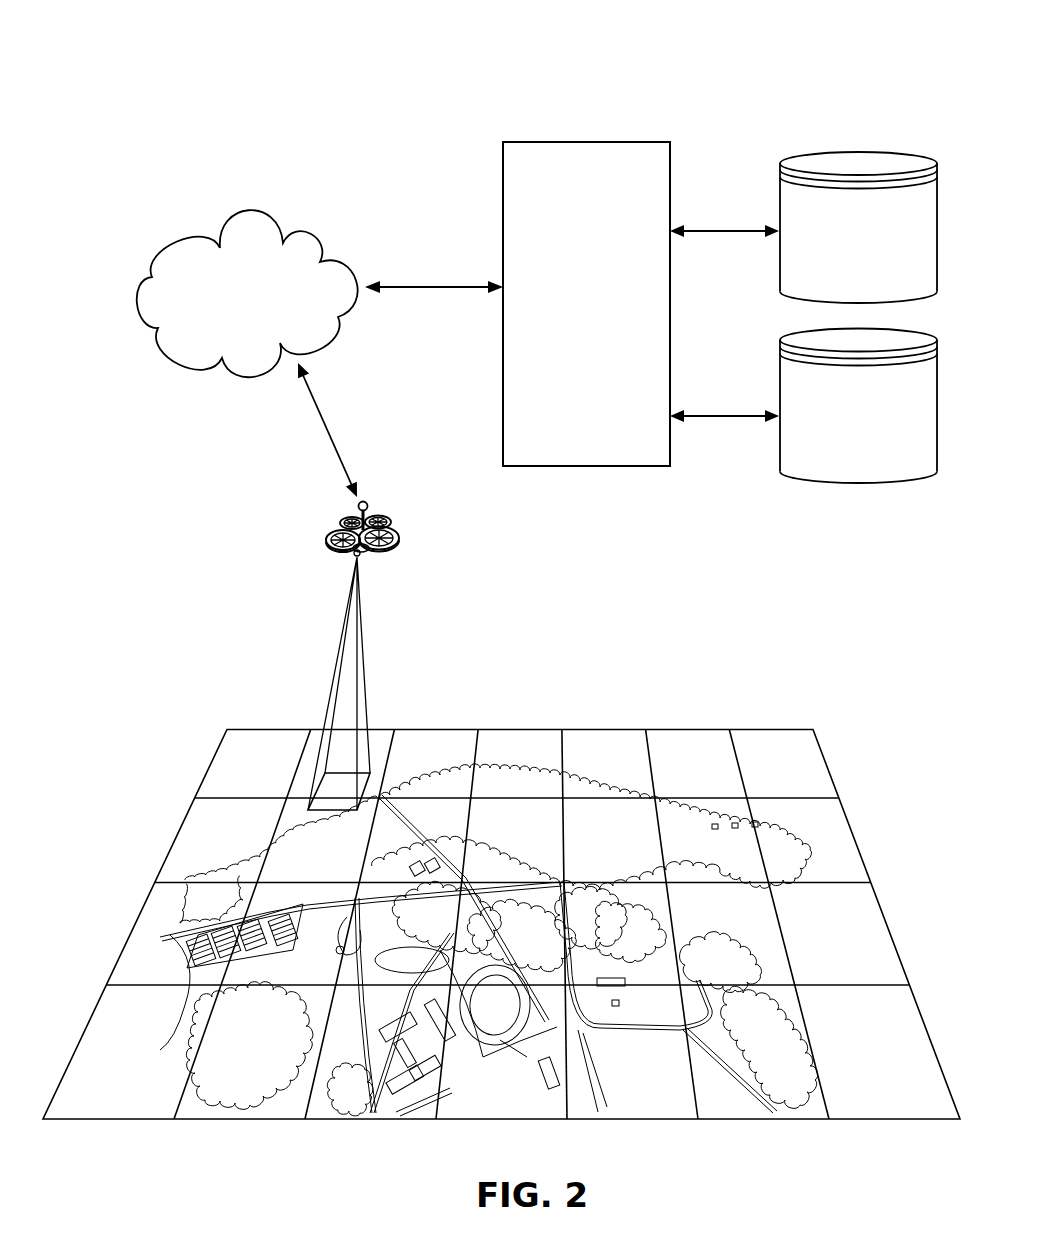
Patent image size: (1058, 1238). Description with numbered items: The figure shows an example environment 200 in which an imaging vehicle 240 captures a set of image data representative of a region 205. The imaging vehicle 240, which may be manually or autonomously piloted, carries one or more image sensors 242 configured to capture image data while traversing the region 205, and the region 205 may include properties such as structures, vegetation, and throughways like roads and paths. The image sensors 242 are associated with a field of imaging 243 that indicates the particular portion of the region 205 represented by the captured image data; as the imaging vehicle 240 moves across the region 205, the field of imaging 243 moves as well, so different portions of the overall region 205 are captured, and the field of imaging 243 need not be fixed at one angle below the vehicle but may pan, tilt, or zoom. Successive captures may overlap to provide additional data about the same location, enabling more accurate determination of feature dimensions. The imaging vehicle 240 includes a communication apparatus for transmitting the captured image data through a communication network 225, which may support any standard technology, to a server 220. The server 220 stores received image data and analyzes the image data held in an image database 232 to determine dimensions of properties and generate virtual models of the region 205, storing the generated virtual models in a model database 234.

The environment 200 is at (363, 88).
The region 205 is at (791, 820).
The server 220 is at (610, 467).
The communication network 225 is at (188, 238).
The image database 232 is at (880, 151).
The model database 234 is at (882, 485).
The imaging vehicle 240 is at (399, 546).
The image sensors 242 is at (361, 556).
The field of imaging 243 is at (322, 788).